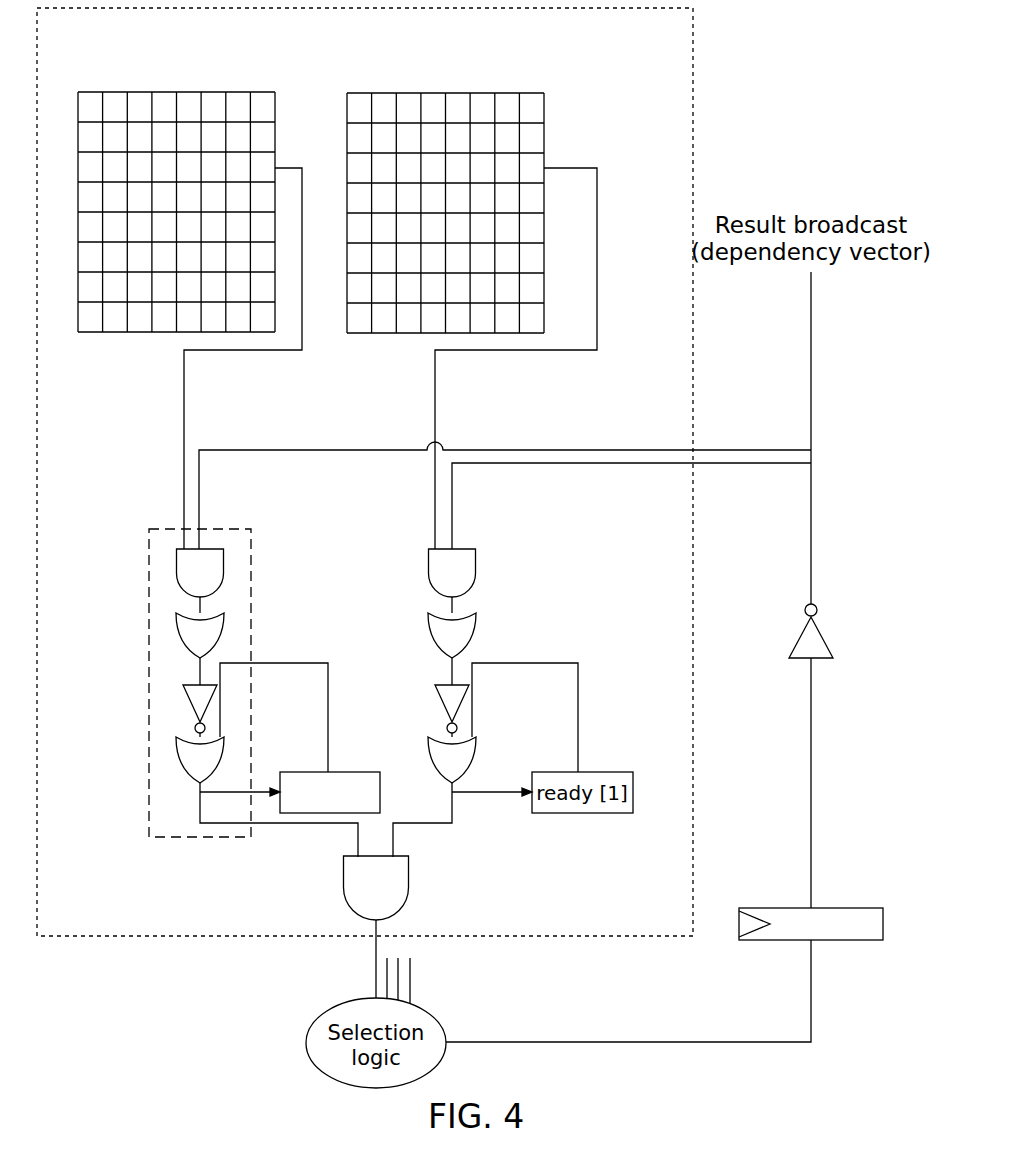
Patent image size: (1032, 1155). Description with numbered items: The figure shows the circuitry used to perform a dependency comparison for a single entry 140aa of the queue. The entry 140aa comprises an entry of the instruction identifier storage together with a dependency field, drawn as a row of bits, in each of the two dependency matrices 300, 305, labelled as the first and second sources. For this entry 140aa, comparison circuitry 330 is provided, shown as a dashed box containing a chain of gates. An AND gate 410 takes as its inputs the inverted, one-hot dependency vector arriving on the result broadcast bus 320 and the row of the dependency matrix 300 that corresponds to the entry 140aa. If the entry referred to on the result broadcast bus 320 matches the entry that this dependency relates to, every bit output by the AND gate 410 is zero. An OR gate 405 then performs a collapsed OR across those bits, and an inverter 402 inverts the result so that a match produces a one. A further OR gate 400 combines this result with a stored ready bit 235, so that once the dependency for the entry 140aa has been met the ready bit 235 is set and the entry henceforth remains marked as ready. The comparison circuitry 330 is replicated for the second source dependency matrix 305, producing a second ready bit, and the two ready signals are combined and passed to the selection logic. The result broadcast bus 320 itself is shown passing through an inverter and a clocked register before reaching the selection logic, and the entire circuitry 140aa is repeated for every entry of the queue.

The entry 140aa is at (200, 922).
The dependency matrix 300 is at (118, 337).
The second source dependency matrix 305 is at (548, 108).
The comparison circuitry 330 is at (148, 815).
The AND gate 410 is at (177, 565).
The OR gate 405 is at (175, 636).
The inverter 402 is at (185, 700).
The OR gate 400 is at (173, 755).
The ready bit 235 is at (365, 750).
The result broadcast bus 320 is at (813, 683).